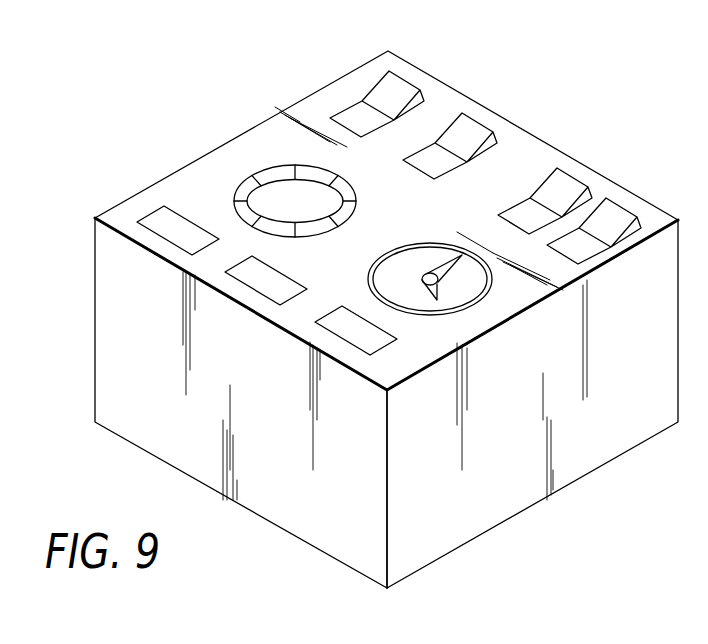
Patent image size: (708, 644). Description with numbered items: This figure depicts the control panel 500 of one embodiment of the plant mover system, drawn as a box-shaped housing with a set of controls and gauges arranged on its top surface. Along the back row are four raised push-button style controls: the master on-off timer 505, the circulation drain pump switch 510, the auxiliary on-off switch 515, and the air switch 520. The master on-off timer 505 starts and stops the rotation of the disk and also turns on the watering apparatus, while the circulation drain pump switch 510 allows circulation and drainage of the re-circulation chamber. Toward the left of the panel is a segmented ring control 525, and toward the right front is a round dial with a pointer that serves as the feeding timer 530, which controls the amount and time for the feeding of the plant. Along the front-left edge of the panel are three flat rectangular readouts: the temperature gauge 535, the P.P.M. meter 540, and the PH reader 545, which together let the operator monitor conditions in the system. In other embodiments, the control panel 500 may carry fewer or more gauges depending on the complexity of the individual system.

The control device housing 500 is at (532, 150).
The master on-off timer 505 is at (395, 85).
The circulation drain pump switch 510 is at (470, 133).
The auxiliary on-off switch 515 is at (570, 185).
The air switch 520 is at (613, 215).
The segmented ring control 525 is at (273, 178).
The feeding timer 530 is at (475, 290).
The temperature gauge 535 is at (162, 220).
The P.P.M. meter 540 is at (253, 267).
The PH reader 545 is at (343, 320).